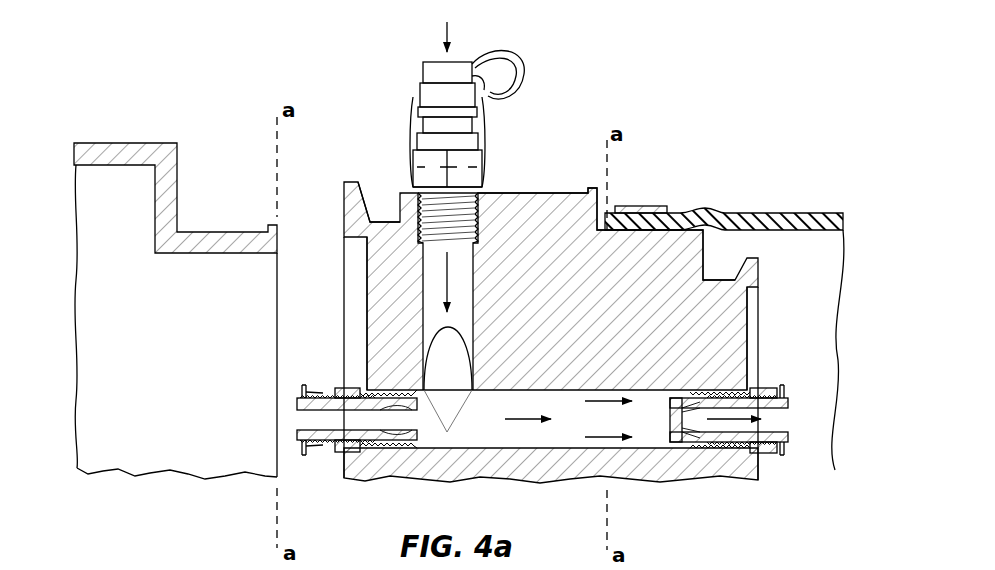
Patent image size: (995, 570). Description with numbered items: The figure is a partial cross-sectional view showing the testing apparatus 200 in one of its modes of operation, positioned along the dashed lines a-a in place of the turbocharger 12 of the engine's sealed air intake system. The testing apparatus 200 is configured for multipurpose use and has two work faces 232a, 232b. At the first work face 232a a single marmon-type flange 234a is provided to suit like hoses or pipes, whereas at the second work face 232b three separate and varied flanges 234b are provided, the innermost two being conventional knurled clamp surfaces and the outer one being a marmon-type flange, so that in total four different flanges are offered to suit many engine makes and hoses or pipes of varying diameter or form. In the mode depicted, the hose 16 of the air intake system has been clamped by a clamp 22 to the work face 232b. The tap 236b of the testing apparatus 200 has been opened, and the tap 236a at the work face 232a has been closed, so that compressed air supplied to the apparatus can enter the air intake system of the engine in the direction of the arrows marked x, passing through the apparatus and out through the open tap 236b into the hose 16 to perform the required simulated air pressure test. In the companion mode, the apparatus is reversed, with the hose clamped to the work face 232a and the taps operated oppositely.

The turbocharger 12 is at (119, 143).
The hose 16 is at (760, 213).
The clamp 22 is at (646, 206).
The testing apparatus 200 is at (593, 136).
The work face 232a is at (333, 313).
The work face 232b is at (802, 343).
The marmon-type flange 234a is at (380, 212).
The flanges 234b is at (602, 216).
The tap 236a is at (353, 455).
The tap 236b is at (770, 447).